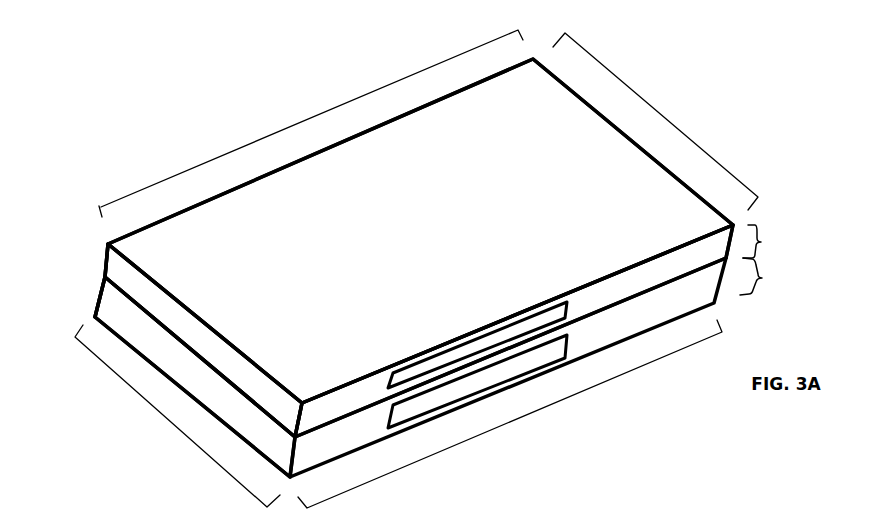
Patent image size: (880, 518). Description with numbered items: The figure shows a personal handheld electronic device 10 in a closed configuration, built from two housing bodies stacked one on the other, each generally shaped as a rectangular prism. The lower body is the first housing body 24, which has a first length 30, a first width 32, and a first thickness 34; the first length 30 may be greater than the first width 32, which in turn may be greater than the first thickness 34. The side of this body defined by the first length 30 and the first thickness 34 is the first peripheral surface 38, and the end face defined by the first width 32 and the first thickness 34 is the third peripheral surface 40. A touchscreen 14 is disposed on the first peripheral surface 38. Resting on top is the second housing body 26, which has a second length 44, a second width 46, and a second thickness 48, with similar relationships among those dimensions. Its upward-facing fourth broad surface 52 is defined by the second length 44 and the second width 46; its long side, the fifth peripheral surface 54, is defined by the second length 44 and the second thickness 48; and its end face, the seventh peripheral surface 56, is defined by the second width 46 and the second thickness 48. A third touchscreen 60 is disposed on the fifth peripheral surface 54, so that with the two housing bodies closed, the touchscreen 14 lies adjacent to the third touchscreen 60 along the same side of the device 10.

The personal handheld electronic device 10 is at (628, 72).
The touchscreen 14 is at (397, 420).
The first housing body 24 is at (100, 293).
The second housing body 26 is at (105, 257).
The first length 30 is at (513, 418).
The first width 32 is at (168, 422).
The first thickness 34 is at (762, 278).
The first peripheral surface 38 is at (410, 367).
The third peripheral surface 40 is at (195, 377).
The second length 44 is at (305, 117).
The second width 46 is at (663, 116).
The second thickness 48 is at (761, 242).
The fourth broad surface 52 is at (419, 248).
The fifth peripheral surface 54 is at (607, 295).
The seventh peripheral surface 56 is at (200, 343).
The third touchscreen 60 is at (419, 366).